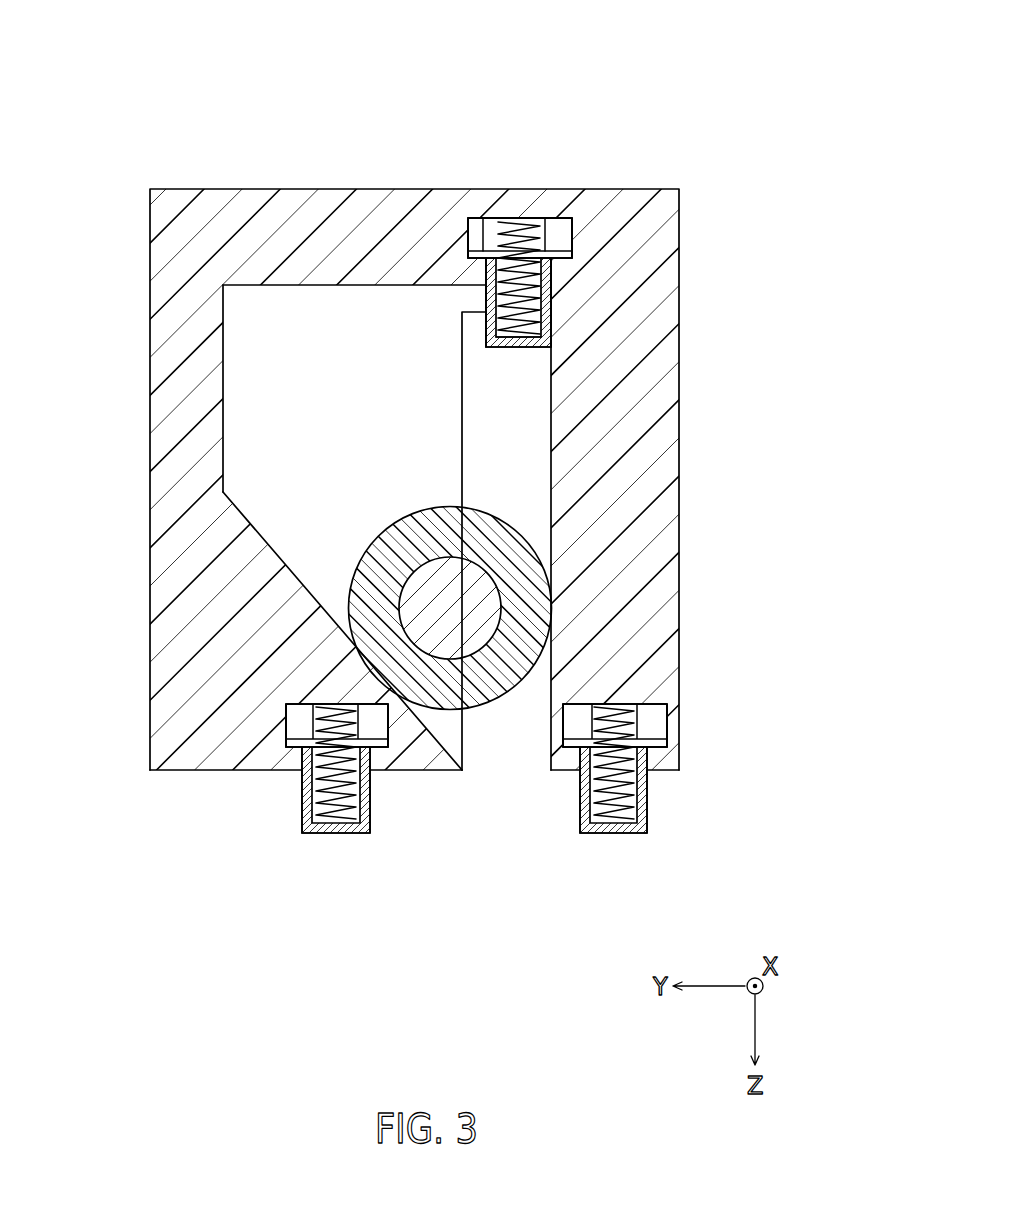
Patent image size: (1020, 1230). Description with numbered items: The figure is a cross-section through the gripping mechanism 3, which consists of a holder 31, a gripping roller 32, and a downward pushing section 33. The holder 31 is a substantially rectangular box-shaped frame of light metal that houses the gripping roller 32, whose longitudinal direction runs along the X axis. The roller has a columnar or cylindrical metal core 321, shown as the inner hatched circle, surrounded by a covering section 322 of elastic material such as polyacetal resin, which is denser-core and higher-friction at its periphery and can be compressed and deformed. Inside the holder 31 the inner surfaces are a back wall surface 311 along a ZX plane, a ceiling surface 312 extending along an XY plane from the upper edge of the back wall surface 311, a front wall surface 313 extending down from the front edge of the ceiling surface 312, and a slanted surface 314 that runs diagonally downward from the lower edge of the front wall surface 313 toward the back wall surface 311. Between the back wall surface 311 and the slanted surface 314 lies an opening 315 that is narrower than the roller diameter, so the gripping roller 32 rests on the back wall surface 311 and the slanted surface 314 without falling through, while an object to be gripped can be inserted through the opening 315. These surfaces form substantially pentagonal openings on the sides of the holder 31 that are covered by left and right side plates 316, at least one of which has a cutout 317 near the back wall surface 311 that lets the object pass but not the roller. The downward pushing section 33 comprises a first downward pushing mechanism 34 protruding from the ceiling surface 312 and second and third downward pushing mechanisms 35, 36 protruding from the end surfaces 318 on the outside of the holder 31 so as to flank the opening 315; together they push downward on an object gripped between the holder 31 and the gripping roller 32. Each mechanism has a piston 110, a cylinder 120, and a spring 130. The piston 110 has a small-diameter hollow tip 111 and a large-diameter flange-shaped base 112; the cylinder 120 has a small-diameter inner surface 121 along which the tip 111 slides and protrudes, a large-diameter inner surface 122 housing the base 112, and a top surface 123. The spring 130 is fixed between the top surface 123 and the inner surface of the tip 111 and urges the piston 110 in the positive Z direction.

The gripping mechanism 3 is at (661, 84).
The holder 31 is at (135, 160).
The back wall surface 311 is at (551, 465).
The ceiling surface 312 is at (385, 286).
The front wall surface 313 is at (225, 357).
The slanted surface 314 is at (247, 524).
The opening 315 is at (475, 795).
The side plate 316 is at (307, 308).
The cutout 317 is at (462, 405).
The end surface 318 is at (152, 772).
The gripping roller 32 is at (427, 579).
The core 321 is at (450, 608).
The covering section 322 is at (437, 514).
The downward pushing section 33 is at (438, 82).
The first downward pushing mechanism 34 is at (480, 166).
The second downward pushing mechanism 35 is at (315, 862).
The third downward pushing mechanism 36 is at (594, 862).
The piston 110 is at (493, 486).
The tip 111 is at (505, 345).
The base 112 is at (481, 233).
The cylinder 120 is at (469, 429).
The small-diameter inner surface 121 is at (550, 266).
The large-diameter inner surface 122 is at (557, 246).
The top surface 123 is at (490, 222).
The spring 130 is at (545, 240).